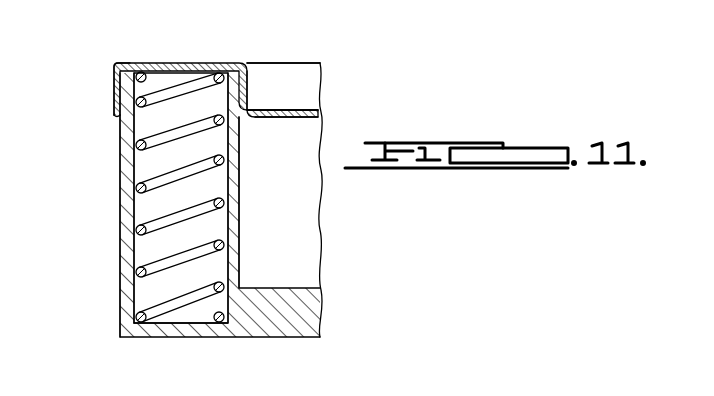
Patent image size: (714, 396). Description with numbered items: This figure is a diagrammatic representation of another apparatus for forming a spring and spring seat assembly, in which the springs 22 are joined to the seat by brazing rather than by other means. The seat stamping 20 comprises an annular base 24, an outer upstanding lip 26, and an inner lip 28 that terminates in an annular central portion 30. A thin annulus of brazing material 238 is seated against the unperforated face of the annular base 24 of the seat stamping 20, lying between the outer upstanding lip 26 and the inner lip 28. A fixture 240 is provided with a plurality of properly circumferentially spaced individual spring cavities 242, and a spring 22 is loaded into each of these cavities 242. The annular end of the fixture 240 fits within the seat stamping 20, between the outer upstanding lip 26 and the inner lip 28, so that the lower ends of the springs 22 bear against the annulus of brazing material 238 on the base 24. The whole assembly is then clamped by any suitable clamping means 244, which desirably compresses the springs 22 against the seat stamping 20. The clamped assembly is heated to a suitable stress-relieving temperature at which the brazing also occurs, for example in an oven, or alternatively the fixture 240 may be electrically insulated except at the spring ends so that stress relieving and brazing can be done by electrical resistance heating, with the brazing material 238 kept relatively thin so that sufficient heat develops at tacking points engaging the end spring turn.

The seat stamping 20 is at (274, 124).
The springs 22 is at (167, 176).
The annular base 24 is at (203, 65).
The outer upstanding lip 26 is at (113, 100).
The inner lip 28 is at (248, 90).
The annular central portion 30 is at (292, 111).
The annulus of brazing material 238 is at (118, 74).
The fixture 240 is at (241, 238).
The spring cavities 242 is at (133, 213).
The clamping means 244 is at (180, 52).